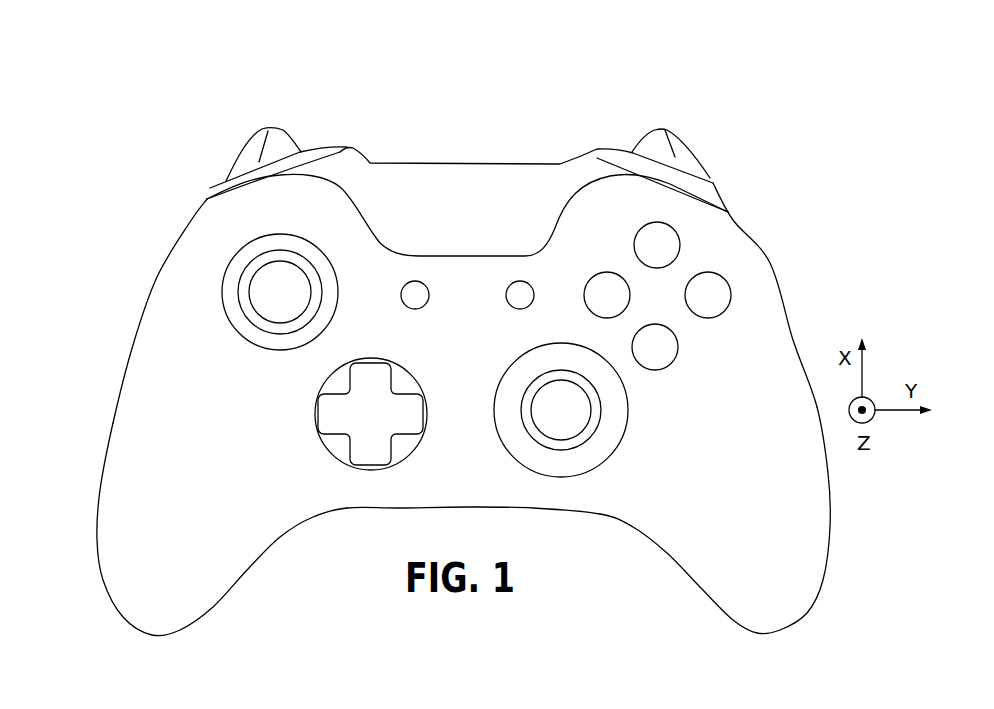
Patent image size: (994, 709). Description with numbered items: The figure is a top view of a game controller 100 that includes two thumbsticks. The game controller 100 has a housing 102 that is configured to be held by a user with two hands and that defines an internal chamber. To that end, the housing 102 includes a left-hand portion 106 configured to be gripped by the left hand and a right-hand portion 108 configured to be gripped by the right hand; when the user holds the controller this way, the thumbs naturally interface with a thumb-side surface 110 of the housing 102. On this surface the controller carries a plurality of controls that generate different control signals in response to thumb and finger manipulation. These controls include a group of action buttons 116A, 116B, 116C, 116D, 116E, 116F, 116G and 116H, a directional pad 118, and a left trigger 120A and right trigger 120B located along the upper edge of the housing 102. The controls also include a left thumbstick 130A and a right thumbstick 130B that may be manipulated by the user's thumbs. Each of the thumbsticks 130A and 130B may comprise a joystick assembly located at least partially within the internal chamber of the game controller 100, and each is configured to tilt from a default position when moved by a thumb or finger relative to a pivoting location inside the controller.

The game controller 100 is at (198, 111).
The housing 102 is at (778, 256).
The left-hand portion 106 is at (163, 632).
The right-hand portion 108 is at (762, 632).
The thumb-side surface 110 is at (128, 484).
The action button 116A is at (225, 178).
The action button 116B is at (708, 176).
The action button 116C is at (603, 272).
The action button 116D is at (671, 361).
The action button 116E is at (731, 298).
The action button 116F is at (680, 243).
The action button 116G is at (415, 281).
The action button 116H is at (520, 281).
The directional pad 118 is at (396, 391).
The left trigger 120A is at (265, 128).
The right trigger 120B is at (664, 128).
The left thumbstick 130A is at (240, 362).
The right thumbstick 130B is at (645, 455).